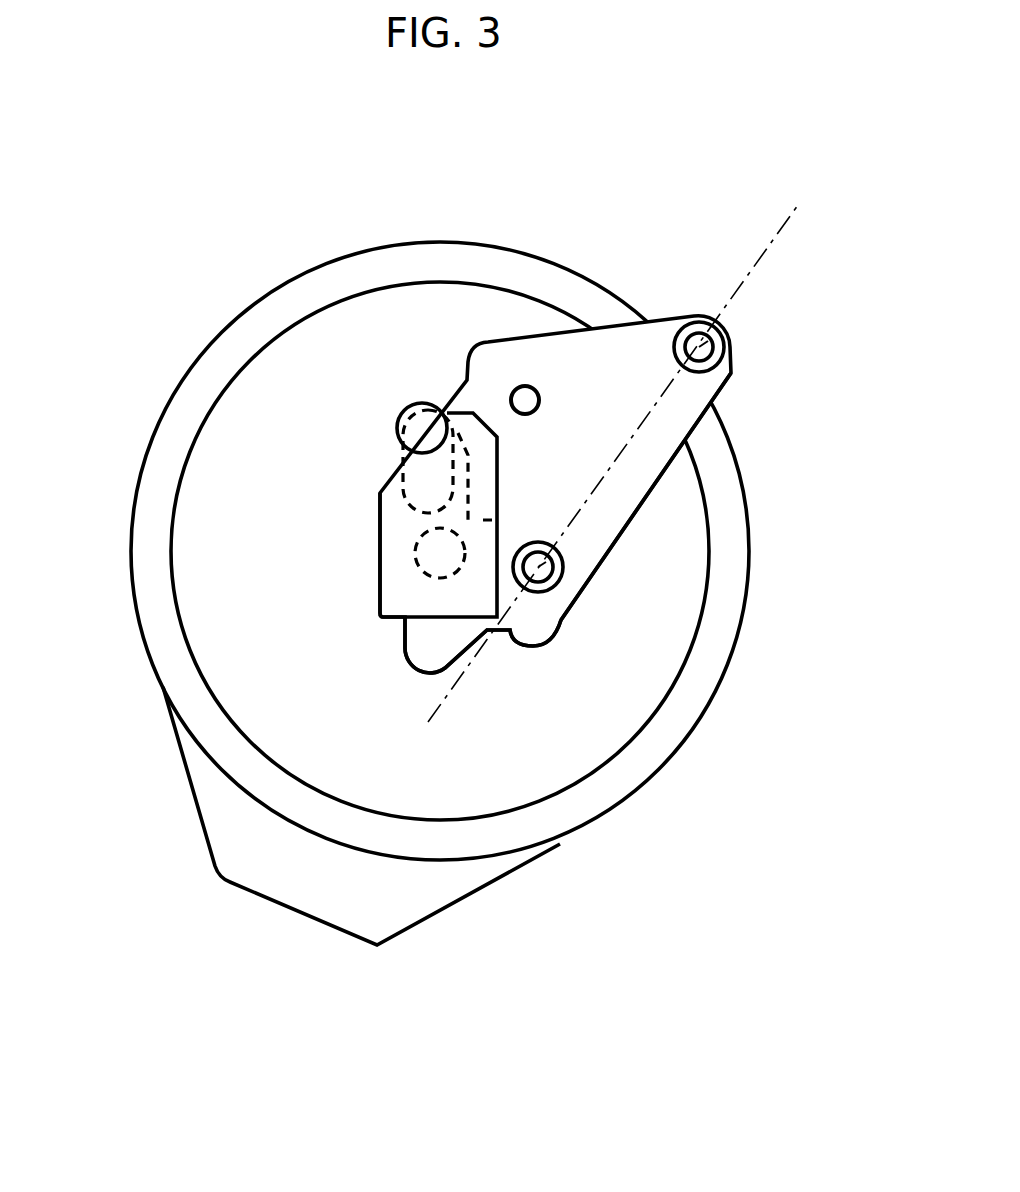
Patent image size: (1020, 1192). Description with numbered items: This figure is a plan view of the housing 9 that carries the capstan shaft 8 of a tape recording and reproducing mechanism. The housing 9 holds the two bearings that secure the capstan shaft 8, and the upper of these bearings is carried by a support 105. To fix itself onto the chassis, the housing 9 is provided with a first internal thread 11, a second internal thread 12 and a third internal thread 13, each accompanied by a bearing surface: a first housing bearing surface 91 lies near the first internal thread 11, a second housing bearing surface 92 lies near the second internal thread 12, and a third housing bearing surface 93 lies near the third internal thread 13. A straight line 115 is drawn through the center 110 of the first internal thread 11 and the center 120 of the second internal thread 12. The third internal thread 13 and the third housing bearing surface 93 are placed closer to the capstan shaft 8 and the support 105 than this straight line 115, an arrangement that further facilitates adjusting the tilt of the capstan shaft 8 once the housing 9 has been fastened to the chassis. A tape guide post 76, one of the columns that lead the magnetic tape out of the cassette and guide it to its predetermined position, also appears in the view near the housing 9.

The capstan shaft 8 is at (413, 545).
The housing 9 is at (400, 503).
The first internal thread 11 is at (697, 320).
The second internal thread 12 is at (565, 573).
The third internal thread 13 is at (531, 385).
The tape guide post 76 is at (413, 425).
The first housing bearing surface 91 is at (720, 365).
The second housing bearing surface 92 is at (563, 567).
The third housing bearing surface 93 is at (505, 357).
The support 105 is at (498, 473).
The center of the first internal thread 110 is at (703, 347).
The straight line 115 is at (768, 258).
The center of the second internal thread 120 is at (557, 590).